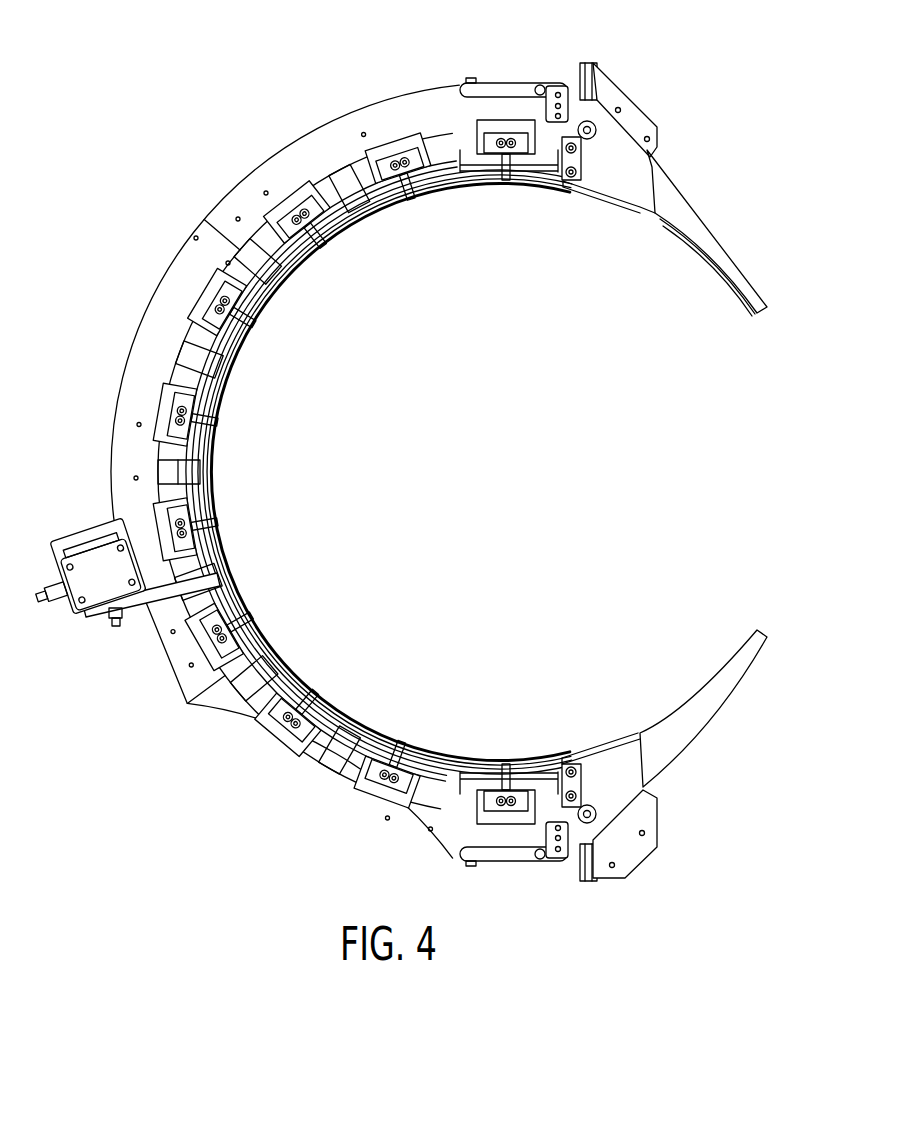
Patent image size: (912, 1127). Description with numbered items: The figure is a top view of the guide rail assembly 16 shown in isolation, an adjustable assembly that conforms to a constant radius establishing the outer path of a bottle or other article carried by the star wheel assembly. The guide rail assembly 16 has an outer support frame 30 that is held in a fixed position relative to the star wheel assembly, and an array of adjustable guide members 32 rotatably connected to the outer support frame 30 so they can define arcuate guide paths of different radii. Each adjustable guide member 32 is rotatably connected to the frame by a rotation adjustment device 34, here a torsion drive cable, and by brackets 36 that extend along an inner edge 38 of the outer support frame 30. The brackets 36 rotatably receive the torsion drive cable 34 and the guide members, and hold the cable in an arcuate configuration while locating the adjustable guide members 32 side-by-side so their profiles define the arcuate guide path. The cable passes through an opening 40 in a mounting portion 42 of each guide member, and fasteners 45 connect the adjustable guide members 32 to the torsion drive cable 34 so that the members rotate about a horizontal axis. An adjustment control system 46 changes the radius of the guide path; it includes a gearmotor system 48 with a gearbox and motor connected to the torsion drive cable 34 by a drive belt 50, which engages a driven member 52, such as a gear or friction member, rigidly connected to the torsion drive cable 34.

The guide rail assembly 16 is at (613, 163).
The outer support frame 30 is at (283, 155).
The adjustable guide members 32 is at (308, 250).
The rotation adjustment device 34 is at (390, 471).
The brackets 36 is at (378, 800).
The inner edge 38 is at (165, 372).
The opening 40 is at (206, 475).
The mounting portion 42 is at (190, 413).
The fasteners 45 is at (213, 308).
The adjustment control system 46 is at (121, 621).
The gearmotor system 48 is at (82, 588).
The drive belt 50 is at (135, 612).
The driven member 52 is at (233, 590).